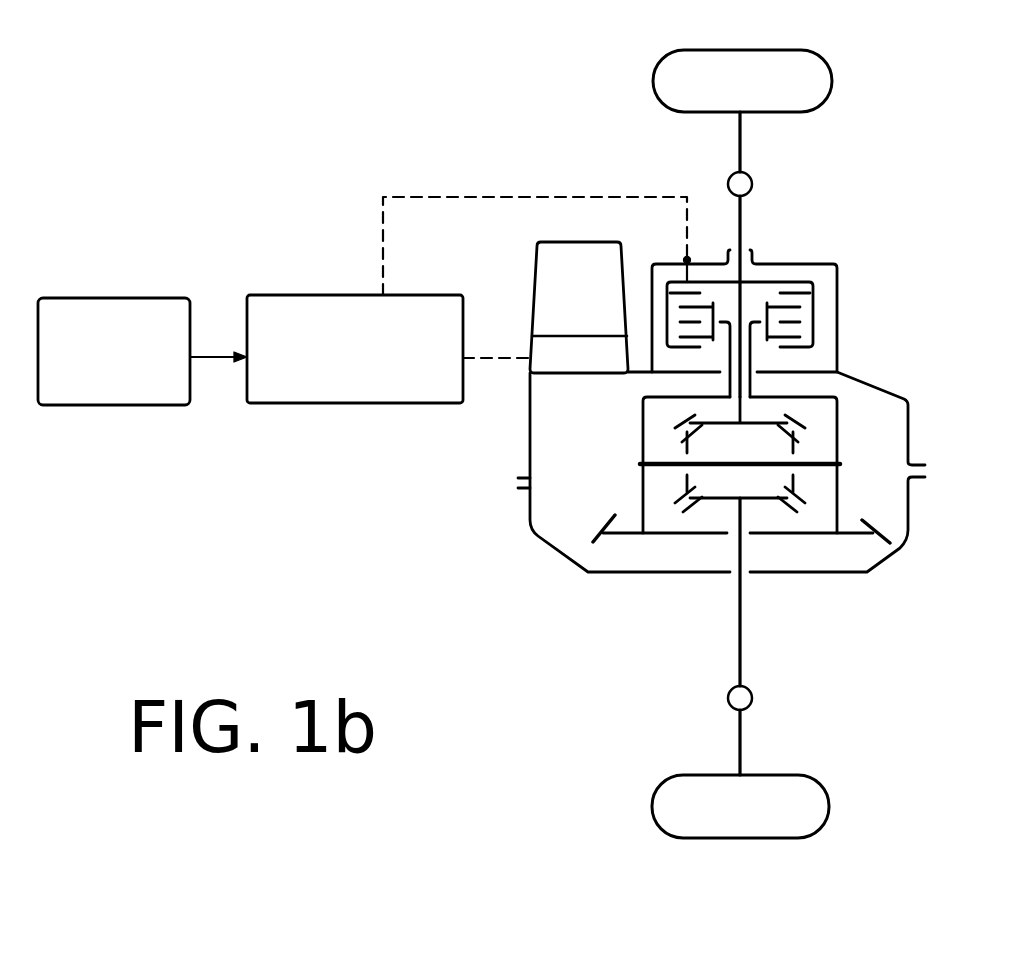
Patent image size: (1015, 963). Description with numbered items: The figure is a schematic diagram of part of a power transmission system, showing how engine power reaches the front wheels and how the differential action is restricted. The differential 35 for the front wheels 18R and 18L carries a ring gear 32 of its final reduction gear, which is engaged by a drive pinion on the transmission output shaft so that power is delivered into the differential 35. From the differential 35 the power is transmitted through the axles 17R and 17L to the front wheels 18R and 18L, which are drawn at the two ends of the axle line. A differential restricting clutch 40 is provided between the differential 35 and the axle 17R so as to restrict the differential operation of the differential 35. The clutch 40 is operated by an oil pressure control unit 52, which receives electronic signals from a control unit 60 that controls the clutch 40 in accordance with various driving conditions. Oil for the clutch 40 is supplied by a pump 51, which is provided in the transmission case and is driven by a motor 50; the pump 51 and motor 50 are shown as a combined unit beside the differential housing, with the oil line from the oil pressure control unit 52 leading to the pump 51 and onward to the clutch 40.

The control unit 60 is at (130, 297).
The oil pressure control unit 52 is at (332, 405).
The pump 51 is at (545, 348).
The motor 50 is at (578, 248).
The differential restricting clutch 40 is at (813, 324).
The differential 35 is at (862, 470).
The ring gear 32 is at (907, 528).
The axle 17R is at (743, 228).
The axle 17L is at (742, 646).
The front wheel 18R is at (807, 82).
The front wheel 18L is at (767, 823).